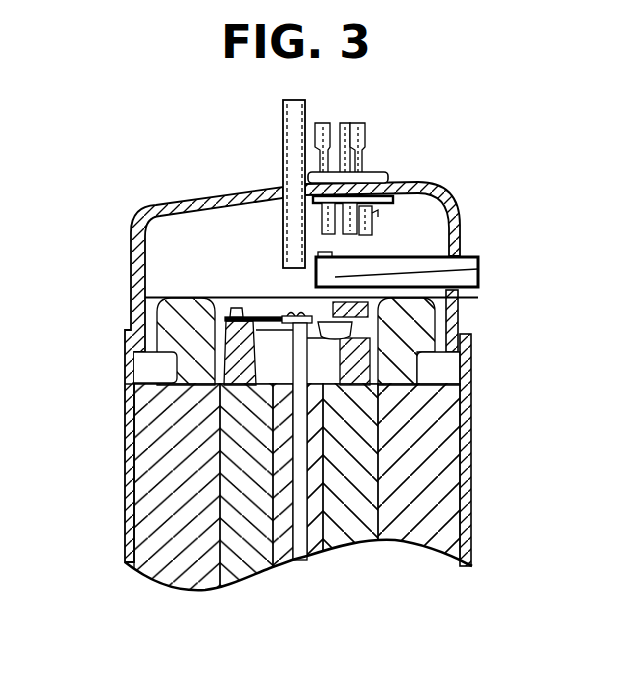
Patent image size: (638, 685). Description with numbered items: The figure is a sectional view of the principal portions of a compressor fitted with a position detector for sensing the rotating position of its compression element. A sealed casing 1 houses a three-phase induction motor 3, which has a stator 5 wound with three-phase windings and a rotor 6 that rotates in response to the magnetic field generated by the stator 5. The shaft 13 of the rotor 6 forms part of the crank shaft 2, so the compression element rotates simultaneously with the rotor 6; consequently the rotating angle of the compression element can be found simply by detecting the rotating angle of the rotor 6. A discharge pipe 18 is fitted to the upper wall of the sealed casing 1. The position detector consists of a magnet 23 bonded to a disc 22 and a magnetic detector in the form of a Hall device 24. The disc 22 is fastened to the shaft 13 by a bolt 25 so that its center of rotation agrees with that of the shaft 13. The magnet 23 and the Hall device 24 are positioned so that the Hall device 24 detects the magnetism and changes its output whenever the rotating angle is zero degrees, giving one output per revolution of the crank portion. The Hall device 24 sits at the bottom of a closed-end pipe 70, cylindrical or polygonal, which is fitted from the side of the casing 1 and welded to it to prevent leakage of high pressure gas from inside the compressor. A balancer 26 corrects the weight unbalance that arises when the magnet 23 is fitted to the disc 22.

The sealed casing 1 is at (445, 196).
The crank shaft 2 is at (268, 563).
The three-phase induction motor 3 is at (440, 514).
The stator 5 is at (448, 457).
The rotor 6 is at (232, 449).
The shaft 13 is at (288, 563).
The discharge pipe 18 is at (281, 127).
The disc 22 is at (253, 296).
The magnet 23 is at (400, 313).
The Hall device 24 is at (480, 272).
The bolt 25 is at (300, 369).
The balancer 26 is at (232, 307).
The pipe 70 is at (390, 256).